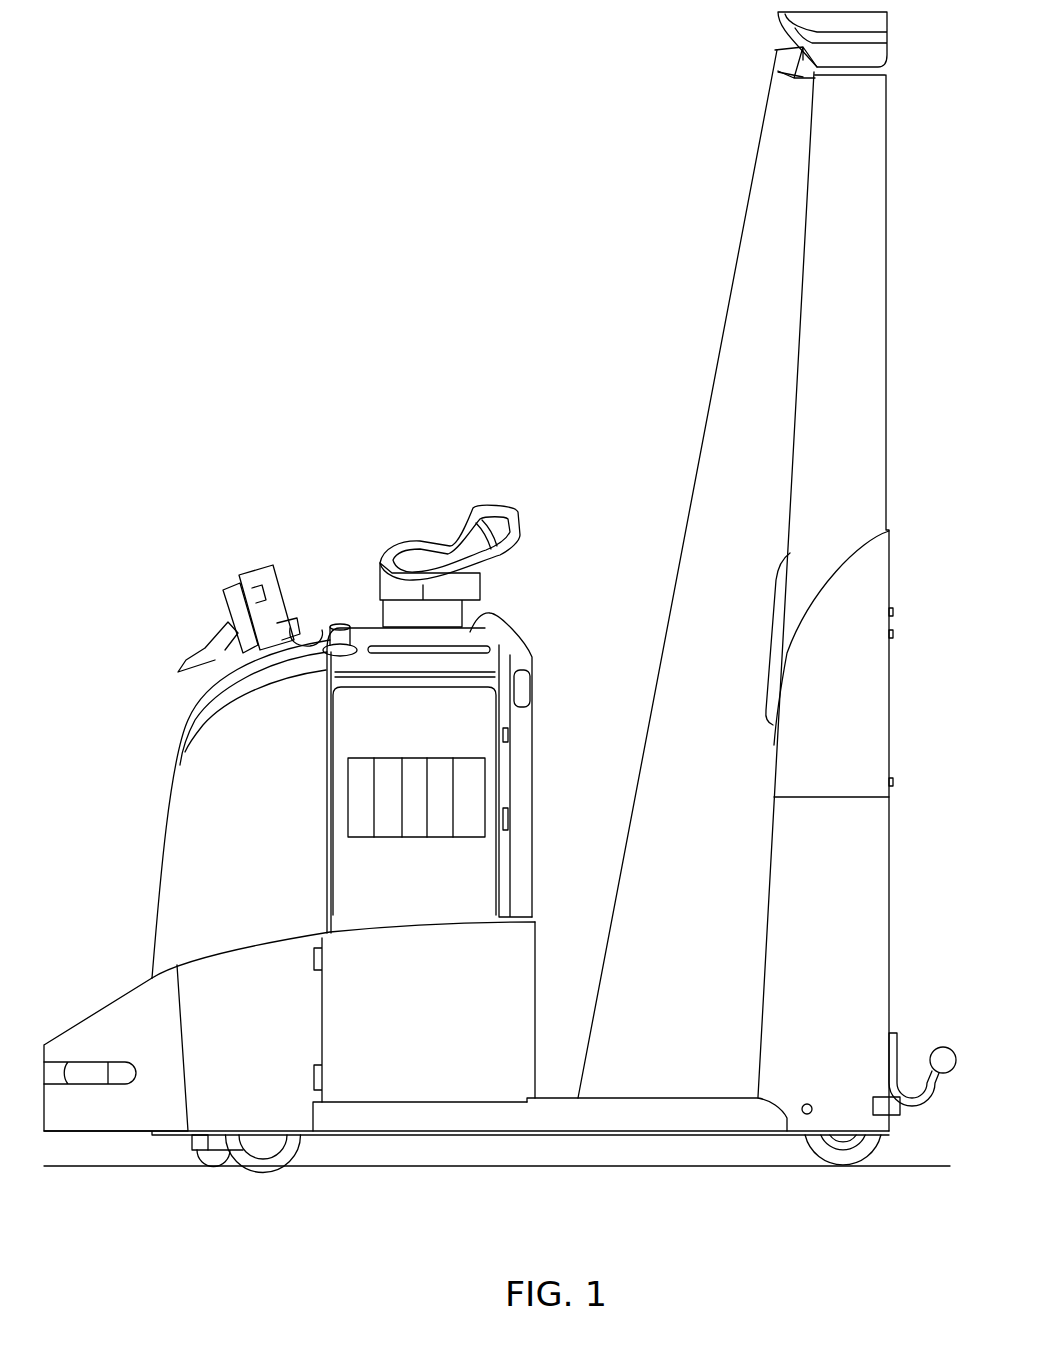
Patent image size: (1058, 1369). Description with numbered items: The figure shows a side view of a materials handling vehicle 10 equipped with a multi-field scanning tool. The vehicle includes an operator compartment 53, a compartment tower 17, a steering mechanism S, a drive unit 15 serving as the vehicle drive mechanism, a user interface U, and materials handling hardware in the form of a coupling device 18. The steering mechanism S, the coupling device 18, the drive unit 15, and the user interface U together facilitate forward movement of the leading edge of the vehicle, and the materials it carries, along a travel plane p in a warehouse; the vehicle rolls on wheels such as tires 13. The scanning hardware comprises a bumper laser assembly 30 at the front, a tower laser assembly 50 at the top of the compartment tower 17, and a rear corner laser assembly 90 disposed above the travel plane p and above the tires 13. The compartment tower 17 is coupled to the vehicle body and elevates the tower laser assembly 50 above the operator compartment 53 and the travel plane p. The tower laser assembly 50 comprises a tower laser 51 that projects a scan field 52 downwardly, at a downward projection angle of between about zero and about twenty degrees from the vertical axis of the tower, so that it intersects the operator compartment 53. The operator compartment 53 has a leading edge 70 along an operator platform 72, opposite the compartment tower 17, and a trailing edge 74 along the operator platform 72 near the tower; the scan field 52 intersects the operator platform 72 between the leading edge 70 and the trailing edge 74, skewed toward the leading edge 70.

The materials handling vehicle 10 is at (235, 490).
The tires 13 is at (243, 1200).
The drive unit 15 is at (285, 1158).
The compartment tower 17 is at (887, 215).
The coupling device 18 is at (925, 1098).
The bumper laser assembly 30 is at (112, 1003).
The tower laser assembly 50 is at (685, 44).
The tower laser 51 is at (792, 75).
The scan field 52 is at (712, 343).
The operator compartment 53 is at (625, 505).
The leading edge 70 is at (537, 1097).
The operator platform 72 is at (624, 1095).
The trailing edge 74 is at (757, 1097).
The rear corner laser assembly 90 is at (860, 1075).
The steering mechanism S is at (497, 505).
The user interface U is at (282, 567).
The travel plane p is at (905, 1167).